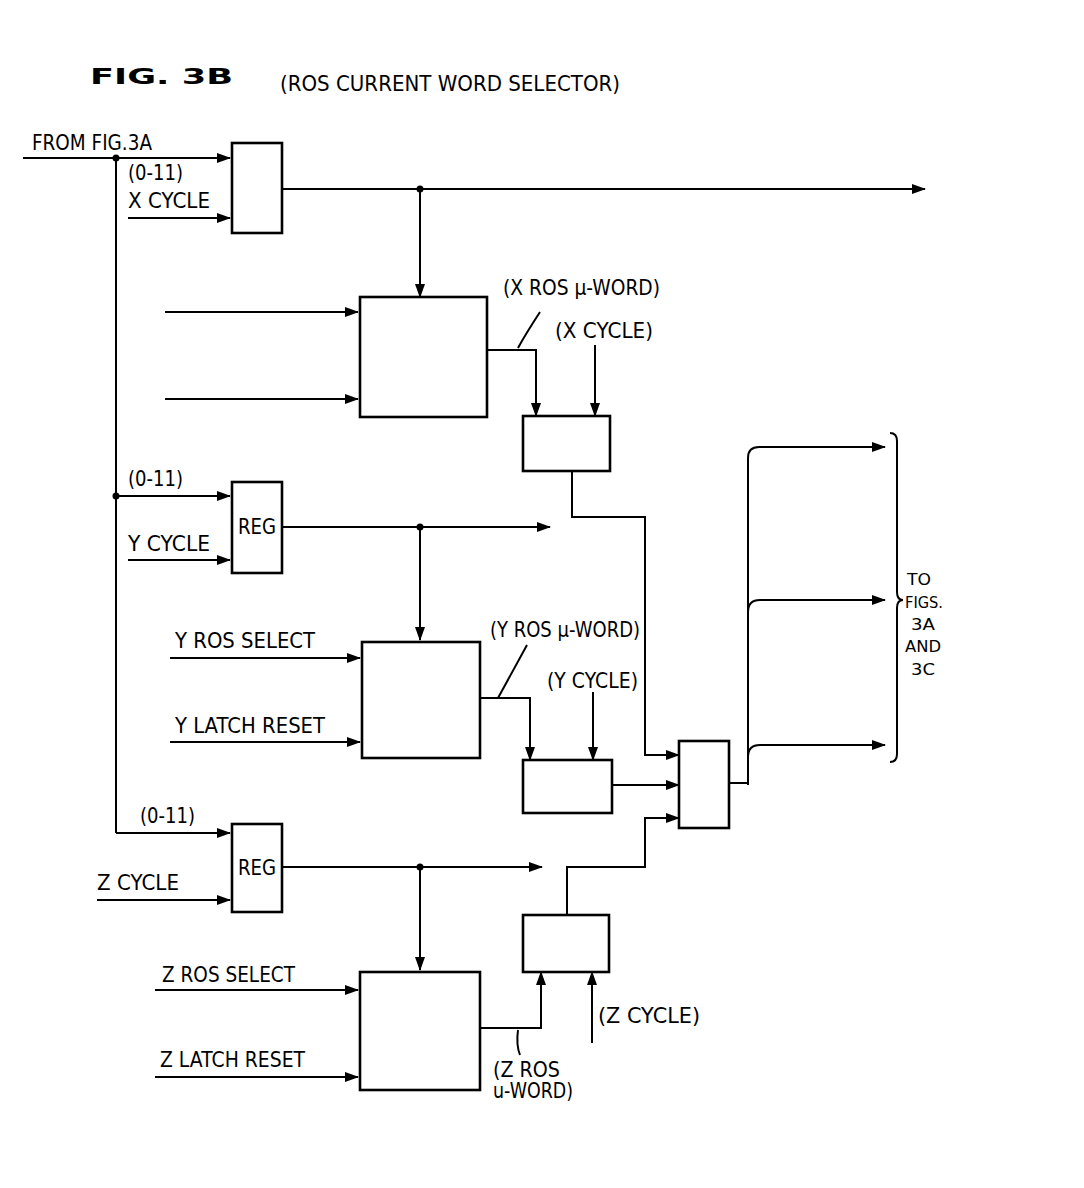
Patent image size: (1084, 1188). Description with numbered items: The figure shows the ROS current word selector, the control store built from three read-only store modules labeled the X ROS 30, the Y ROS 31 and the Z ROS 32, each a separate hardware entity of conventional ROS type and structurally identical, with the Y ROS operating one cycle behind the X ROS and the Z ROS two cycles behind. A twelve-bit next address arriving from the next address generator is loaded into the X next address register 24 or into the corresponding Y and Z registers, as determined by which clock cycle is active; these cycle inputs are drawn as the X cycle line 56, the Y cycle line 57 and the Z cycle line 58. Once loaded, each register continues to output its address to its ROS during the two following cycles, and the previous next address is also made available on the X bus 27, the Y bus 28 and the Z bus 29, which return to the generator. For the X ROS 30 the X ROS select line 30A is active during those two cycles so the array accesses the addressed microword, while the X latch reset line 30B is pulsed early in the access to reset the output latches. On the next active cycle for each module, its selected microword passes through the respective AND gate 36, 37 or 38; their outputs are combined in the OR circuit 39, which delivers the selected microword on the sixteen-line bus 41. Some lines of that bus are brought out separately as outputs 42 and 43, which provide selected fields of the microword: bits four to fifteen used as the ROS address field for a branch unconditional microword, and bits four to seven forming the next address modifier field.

The next address register 24 is at (265, 142).
The X next address bus 27 is at (640, 190).
The Y next address bus 28 is at (500, 525).
The Z next address bus 29 is at (482, 869).
The X ROS 30 is at (407, 410).
The X ROS select line 30A is at (336, 316).
The X latch reset line 30B is at (318, 402).
The Y ROS 31 is at (408, 752).
The Z ROS 32 is at (415, 1085).
The AND gate 36 is at (600, 451).
The AND gate 37 is at (523, 784).
The AND gate 38 is at (603, 945).
The OR circuit 39 is at (695, 740).
The bus 41 is at (864, 742).
The output bus 42 is at (746, 457).
The output lines 43 is at (863, 597).
The X cycle line 56 is at (186, 218).
The Y cycle line 57 is at (180, 560).
The Z cycle line 58 is at (193, 900).